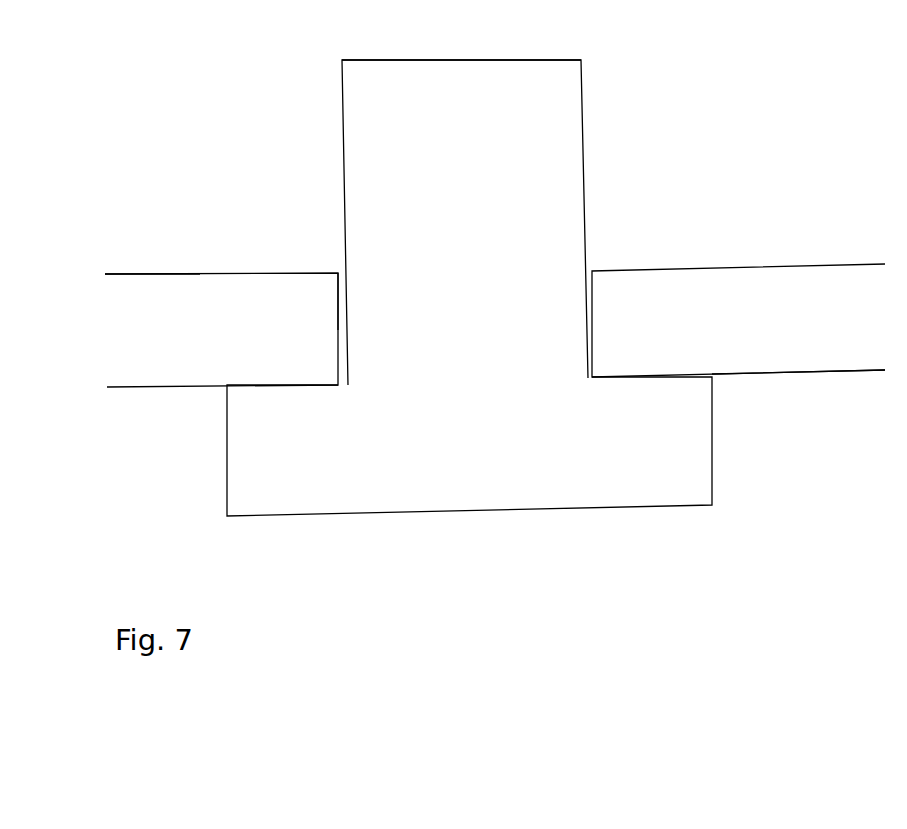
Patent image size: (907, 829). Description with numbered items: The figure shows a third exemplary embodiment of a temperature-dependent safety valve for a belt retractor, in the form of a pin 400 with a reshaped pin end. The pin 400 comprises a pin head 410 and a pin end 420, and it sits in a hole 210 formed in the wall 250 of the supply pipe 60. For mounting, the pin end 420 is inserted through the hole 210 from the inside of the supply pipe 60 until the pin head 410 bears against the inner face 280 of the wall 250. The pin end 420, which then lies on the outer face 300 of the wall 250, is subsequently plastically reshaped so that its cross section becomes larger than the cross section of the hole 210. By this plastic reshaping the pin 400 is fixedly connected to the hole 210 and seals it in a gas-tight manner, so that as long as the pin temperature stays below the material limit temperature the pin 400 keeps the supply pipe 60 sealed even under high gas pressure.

The supply pipe 60 is at (193, 355).
The hole 210 is at (340, 275).
The wall 250 is at (238, 300).
The inner face 280 is at (773, 375).
The outer face 300 is at (682, 267).
The pin 400 is at (518, 218).
The pin head 410 is at (678, 453).
The pin end 420 is at (543, 80).